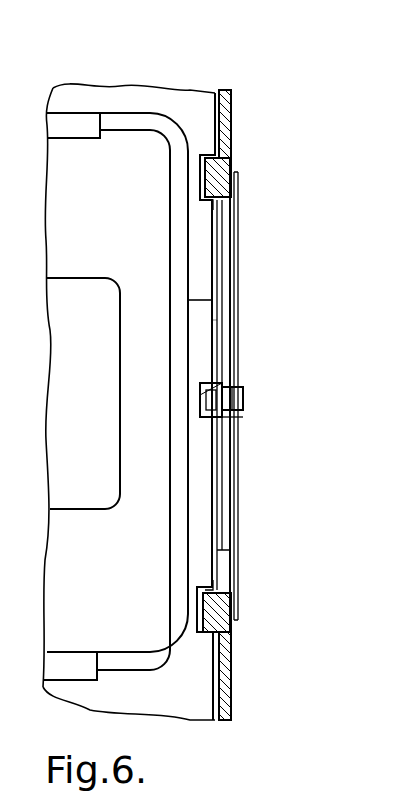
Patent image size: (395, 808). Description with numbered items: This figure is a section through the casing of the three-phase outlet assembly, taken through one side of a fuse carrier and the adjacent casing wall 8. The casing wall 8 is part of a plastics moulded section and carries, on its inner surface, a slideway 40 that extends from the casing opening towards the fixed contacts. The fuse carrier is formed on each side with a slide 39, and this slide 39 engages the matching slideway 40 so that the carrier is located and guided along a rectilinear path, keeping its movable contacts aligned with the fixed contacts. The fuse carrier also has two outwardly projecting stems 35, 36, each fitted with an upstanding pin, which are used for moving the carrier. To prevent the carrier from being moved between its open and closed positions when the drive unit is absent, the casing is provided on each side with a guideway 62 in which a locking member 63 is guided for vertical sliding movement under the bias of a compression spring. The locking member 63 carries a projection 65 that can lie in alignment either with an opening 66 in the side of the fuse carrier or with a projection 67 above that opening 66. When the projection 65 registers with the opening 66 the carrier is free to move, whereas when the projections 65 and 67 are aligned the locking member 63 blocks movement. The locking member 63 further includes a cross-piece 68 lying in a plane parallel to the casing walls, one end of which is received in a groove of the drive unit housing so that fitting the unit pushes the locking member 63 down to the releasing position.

The wall 8 is at (233, 140).
The stem 35 is at (143, 665).
The stem 36 is at (132, 113).
The slide 39 is at (208, 207).
The slideway 40 is at (200, 186).
The guideway 62 is at (234, 505).
The locking member 63 is at (265, 382).
The projection 65 is at (222, 385).
The opening 66 is at (240, 408).
The projection 67 is at (207, 330).
The cross-piece 68 is at (228, 392).